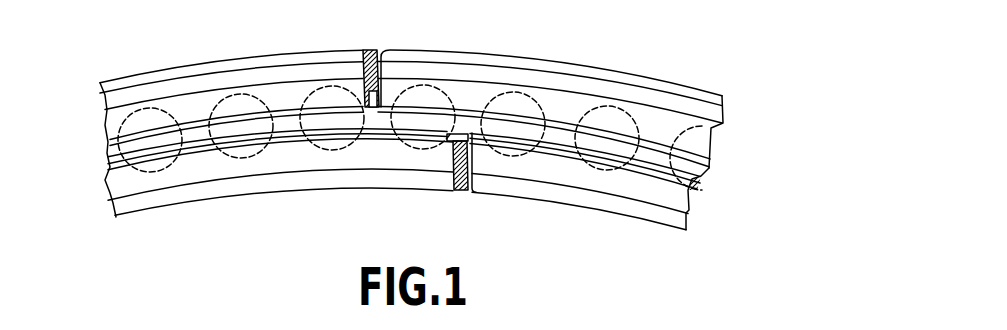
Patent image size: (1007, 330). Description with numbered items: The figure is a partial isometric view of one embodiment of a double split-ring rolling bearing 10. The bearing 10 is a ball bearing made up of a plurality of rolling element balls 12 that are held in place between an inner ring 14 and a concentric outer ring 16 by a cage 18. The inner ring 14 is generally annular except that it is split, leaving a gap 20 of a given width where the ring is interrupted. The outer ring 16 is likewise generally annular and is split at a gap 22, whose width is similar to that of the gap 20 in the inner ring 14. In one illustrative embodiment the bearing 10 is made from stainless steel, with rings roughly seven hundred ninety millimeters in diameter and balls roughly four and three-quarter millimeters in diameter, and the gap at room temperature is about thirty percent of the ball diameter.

The bearing 10 is at (583, 44).
The rolling element balls 12 is at (170, 160).
The inner ring 14 is at (603, 182).
The outer ring 16 is at (481, 77).
The cage 18 is at (110, 158).
The gap 20 is at (457, 195).
The gap 22 is at (373, 44).